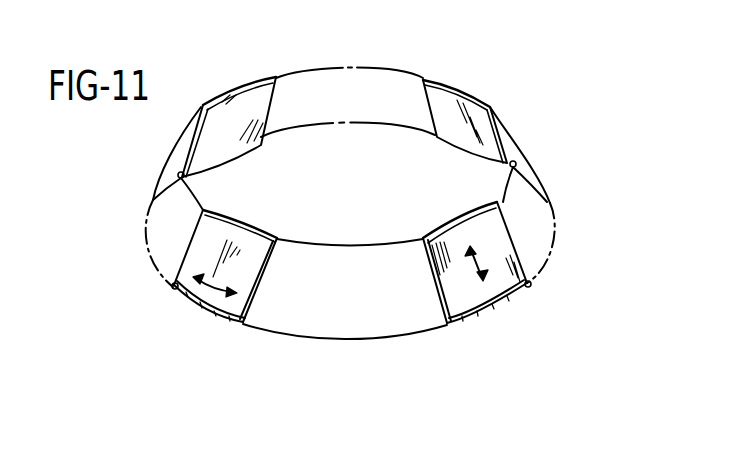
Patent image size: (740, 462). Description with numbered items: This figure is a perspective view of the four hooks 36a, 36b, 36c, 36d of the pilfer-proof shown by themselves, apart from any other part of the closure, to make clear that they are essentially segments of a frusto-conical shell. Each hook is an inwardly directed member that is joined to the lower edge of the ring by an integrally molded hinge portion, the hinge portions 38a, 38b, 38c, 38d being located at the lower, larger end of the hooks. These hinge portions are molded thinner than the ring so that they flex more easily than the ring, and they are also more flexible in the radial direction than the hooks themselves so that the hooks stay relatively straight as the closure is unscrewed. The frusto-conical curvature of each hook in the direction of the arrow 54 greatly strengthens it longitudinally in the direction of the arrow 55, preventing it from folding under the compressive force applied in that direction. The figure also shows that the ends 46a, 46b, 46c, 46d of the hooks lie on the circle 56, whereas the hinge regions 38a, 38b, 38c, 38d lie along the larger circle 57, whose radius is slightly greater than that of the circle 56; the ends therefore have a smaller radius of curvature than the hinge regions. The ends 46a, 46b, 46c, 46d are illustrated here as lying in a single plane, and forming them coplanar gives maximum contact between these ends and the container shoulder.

The hook 36a is at (268, 104).
The hook 36b is at (518, 244).
The hook 36c is at (499, 96).
The hook 36d is at (187, 245).
The hinge portion 38a is at (175, 172).
The hinge portion 38b is at (531, 284).
The hinge portion 38c is at (518, 162).
The hinge portion 38d is at (176, 291).
The end of hook 46a is at (250, 82).
The end of hook 46b is at (452, 221).
The end of hook 46c is at (454, 83).
The end of hook 46d is at (237, 221).
The arrow indicating direction of curvature 54 is at (209, 298).
The arrow indicating longitudinal direction 55 is at (468, 268).
The circle 56 is at (325, 247).
The larger circle 57 is at (312, 342).